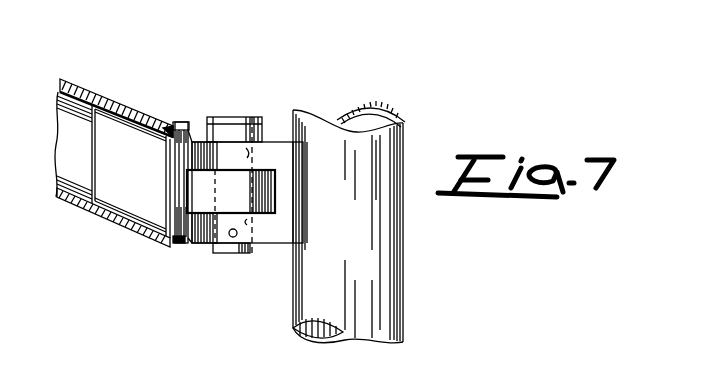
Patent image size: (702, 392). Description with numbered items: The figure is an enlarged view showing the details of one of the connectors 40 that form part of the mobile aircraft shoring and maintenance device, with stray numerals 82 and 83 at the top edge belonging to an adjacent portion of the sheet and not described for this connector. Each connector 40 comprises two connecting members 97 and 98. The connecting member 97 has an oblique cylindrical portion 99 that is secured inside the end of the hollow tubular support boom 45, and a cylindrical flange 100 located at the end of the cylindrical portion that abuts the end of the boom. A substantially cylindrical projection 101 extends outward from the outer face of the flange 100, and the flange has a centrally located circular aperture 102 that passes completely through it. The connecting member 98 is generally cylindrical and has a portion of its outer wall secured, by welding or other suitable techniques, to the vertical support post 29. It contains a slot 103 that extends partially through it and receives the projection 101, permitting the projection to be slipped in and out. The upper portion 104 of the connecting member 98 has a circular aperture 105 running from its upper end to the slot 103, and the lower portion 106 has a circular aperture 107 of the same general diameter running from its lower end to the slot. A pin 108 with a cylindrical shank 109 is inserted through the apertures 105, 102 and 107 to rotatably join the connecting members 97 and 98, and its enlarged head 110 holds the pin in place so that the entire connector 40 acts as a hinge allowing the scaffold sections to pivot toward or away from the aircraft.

The vertical support post 29 is at (405, 157).
The connector 40 is at (228, 90).
The hollow tubular support boom 45 is at (81, 86).
The connecting member 97 is at (178, 117).
The connecting member 98 is at (278, 246).
The oblique cylindrical portion 99 is at (143, 156).
The cylindrical flange 100 is at (184, 245).
The cylindrical projection 101 is at (280, 142).
The circular aperture 102 is at (270, 197).
The slot 103 is at (198, 244).
The upper portion 104 is at (189, 126).
The circular aperture 105 is at (247, 150).
The lower portion 106 is at (192, 245).
The circular aperture 107 is at (250, 225).
The pin 108 is at (230, 119).
The cylindrical shank 109 is at (227, 253).
The enlarged head 110 is at (206, 126).
The element of adjacent figure 82 is at (462, 8).
The element of adjacent figure 83 is at (660, 9).